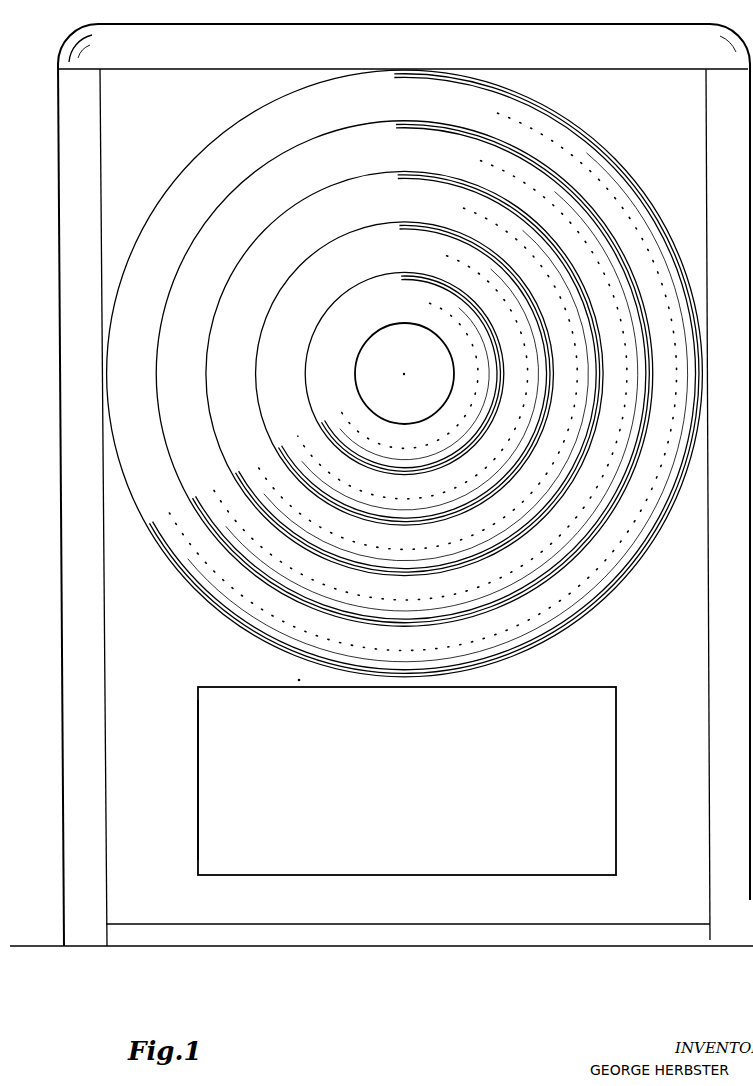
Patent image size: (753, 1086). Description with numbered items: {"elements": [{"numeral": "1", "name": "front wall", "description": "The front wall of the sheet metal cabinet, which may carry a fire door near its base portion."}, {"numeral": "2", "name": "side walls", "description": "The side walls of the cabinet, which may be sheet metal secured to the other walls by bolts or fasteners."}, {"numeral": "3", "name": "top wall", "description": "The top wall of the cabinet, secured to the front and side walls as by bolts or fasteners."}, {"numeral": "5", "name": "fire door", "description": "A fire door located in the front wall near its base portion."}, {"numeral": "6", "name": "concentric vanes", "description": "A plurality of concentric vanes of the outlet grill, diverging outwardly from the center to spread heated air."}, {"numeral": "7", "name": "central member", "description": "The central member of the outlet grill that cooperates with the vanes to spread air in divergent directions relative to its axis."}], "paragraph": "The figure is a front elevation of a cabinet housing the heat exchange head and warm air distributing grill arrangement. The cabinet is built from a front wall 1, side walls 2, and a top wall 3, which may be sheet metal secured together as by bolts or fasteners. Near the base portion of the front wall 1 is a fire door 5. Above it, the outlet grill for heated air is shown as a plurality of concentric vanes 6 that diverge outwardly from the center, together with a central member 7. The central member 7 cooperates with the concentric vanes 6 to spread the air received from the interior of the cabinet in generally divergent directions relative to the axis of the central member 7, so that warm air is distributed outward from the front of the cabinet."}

The panel plate 1 is at (407, 768).
The housing frame 2 is at (61, 388).
The top wall / section line 3 is at (412, 22).
The panel edge 5 is at (198, 781).
The concentric rings 6 is at (405, 373).
The central disc 7 is at (404, 373).